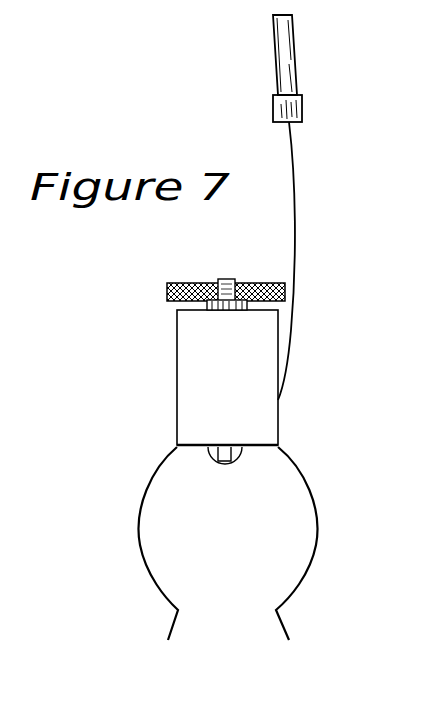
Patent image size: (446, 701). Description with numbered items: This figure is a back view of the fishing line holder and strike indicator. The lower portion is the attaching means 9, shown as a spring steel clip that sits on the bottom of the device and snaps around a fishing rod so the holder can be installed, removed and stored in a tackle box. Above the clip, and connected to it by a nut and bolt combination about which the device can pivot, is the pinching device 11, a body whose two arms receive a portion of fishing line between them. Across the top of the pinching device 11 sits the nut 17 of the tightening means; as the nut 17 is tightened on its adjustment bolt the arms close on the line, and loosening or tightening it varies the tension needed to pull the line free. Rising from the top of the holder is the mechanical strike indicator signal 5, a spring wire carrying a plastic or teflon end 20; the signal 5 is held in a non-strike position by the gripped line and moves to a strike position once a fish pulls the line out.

The mechanical strike indicator signal 5 is at (296, 208).
The attaching means 9 is at (140, 545).
The pinching device 11 is at (190, 397).
The nut 17 is at (171, 284).
The plastic or teflon end 20 is at (290, 70).